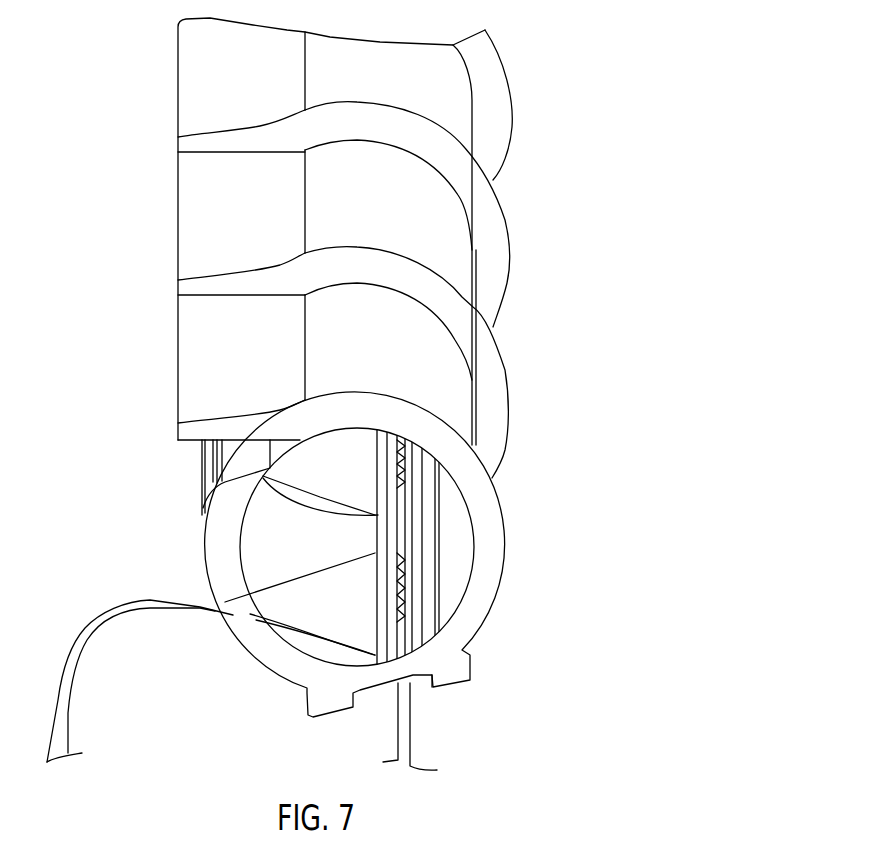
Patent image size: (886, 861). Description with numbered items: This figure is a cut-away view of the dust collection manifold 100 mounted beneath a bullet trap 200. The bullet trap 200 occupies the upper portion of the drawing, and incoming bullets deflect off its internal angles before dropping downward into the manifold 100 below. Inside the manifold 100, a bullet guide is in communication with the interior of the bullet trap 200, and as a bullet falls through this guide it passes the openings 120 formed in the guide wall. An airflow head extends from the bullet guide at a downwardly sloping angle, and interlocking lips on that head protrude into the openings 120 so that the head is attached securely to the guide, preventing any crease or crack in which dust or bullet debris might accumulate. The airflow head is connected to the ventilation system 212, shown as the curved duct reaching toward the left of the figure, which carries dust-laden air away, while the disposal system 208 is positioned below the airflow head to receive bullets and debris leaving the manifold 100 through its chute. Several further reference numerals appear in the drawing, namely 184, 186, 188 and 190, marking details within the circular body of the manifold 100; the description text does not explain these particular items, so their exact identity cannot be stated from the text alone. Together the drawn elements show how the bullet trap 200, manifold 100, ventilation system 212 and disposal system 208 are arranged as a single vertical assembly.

The dust collection manifold 100 is at (387, 623).
The openings 120 is at (393, 553).
The upper bracket 184 is at (378, 553).
The lower bracket 186 is at (430, 693).
The fastener 188 is at (230, 607).
The lower plate 190 is at (375, 553).
The bullet trap 200 is at (427, 395).
The disposal system 208 is at (413, 733).
The ventilation system 212 is at (83, 618).